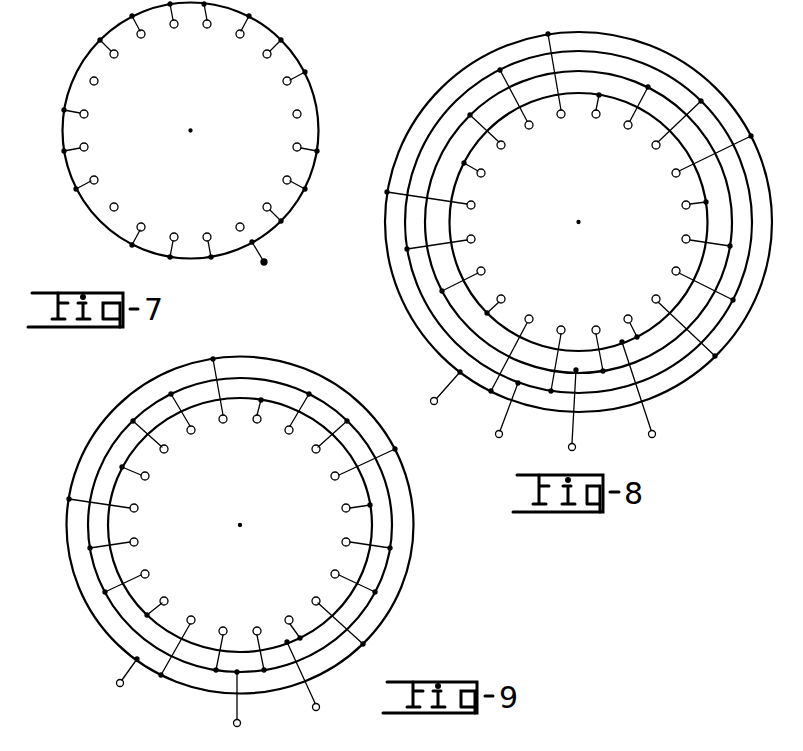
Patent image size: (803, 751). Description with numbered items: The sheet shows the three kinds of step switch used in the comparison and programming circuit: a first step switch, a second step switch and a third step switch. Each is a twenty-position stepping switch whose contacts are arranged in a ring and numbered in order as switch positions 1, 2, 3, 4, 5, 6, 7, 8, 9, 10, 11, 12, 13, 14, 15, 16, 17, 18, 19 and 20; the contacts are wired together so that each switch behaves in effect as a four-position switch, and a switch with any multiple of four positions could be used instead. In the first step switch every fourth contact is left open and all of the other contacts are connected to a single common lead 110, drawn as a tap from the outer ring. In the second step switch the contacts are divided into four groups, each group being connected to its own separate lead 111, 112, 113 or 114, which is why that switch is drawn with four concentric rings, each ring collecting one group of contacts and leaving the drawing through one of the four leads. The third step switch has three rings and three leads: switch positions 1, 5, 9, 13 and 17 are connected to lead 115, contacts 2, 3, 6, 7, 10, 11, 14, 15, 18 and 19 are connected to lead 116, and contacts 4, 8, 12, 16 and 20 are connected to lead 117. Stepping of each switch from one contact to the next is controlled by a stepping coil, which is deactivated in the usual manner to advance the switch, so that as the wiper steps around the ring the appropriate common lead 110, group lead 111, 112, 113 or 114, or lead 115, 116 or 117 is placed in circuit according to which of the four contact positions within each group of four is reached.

In FIG. 7, the switch position 1 is at (207, 23).
In FIG. 8, the switch position 1 is at (596, 114).
In FIG. 9, the switch position 1 is at (258, 419).
In FIG. 7, the switch contact 2 is at (241, 34).
In FIG. 8, the switch contact 2 is at (635, 114).
In FIG. 9, the switch contact 2 is at (295, 420).
In FIG. 7, the switch contact 3 is at (269, 54).
In FIG. 8, the switch contact 3 is at (673, 130).
In FIG. 9, the switch contact 3 is at (326, 442).
In FIG. 7, the switch contact 4 is at (289, 82).
In FIG. 8, the switch contact 4 is at (707, 160).
In FIG. 9, the switch contact 4 is at (359, 468).
In FIG. 7, the switch position 5 is at (291, 116).
In FIG. 8, the switch position 5 is at (689, 207).
In FIG. 9, the switch position 5 is at (351, 510).
In FIG. 7, the switch contact 6 is at (300, 146).
In FIG. 8, the switch contact 6 is at (701, 240).
In FIG. 9, the switch contact 6 is at (361, 542).
In FIG. 7, the switch contact 7 is at (289, 179).
In FIG. 8, the switch contact 7 is at (698, 281).
In FIG. 9, the switch contact 7 is at (349, 578).
In FIG. 7, the switch contact 8 is at (269, 207).
In FIG. 8, the switch contact 8 is at (680, 321).
In FIG. 9, the switch contact 8 is at (334, 616).
In FIG. 7, the switch position 9 is at (237, 220).
In FIG. 8, the switch position 9 is at (629, 320).
In FIG. 9, the switch position 9 is at (291, 621).
In FIG. 7, the switch contact 10 is at (205, 238).
In FIG. 8, the switch contact 10 is at (595, 342).
In FIG. 9, the switch contact 10 is at (257, 642).
In FIG. 7, the switch contact 11 is at (175, 238).
In FIG. 8, the switch contact 11 is at (560, 352).
In FIG. 9, the switch contact 11 is at (223, 642).
In FIG. 7, the switch contact 12 is at (142, 228).
In FIG. 8, the switch contact 12 is at (515, 347).
In FIG. 9, the switch contact 12 is at (182, 640).
In FIG. 7, the switch position 13 is at (120, 201).
In FIG. 8, the switch position 13 is at (501, 299).
In FIG. 9, the switch position 13 is at (163, 601).
In FIG. 7, the switch contact 14 is at (94, 179).
In FIG. 8, the switch contact 14 is at (470, 276).
In FIG. 9, the switch contact 14 is at (133, 578).
In FIG. 7, the switch contact 15 is at (83, 146).
In FIG. 8, the switch contact 15 is at (448, 241).
In FIG. 9, the switch contact 15 is at (121, 542).
In FIG. 7, the switch contact 16 is at (83, 115).
In FIG. 8, the switch contact 16 is at (438, 202).
In FIG. 9, the switch contact 16 is at (111, 507).
In FIG. 7, the switch position 17 is at (102, 86).
In FIG. 8, the switch position 17 is at (481, 173).
In FIG. 9, the switch position 17 is at (142, 477).
In FIG. 7, the switch contact 18 is at (114, 54).
In FIG. 8, the switch contact 18 is at (493, 137).
In FIG. 9, the switch contact 18 is at (156, 442).
In FIG. 7, the switch contact 19 is at (142, 34).
In FIG. 8, the switch contact 19 is at (520, 106).
In FIG. 9, the switch contact 19 is at (187, 420).
In FIG. 7, the switch contact 20 is at (175, 23).
In FIG. 8, the switch contact 20 is at (558, 83).
In FIG. 9, the switch contact 20 is at (221, 398).
In FIG. 7, the common lead 110 is at (259, 252).
In FIG. 8, the lead 111 is at (447, 385).
In FIG. 8, the lead 112 is at (504, 421).
In FIG. 8, the lead 113 is at (574, 430).
In FIG. 8, the lead 114 is at (648, 418).
In FIG. 9, the lead 115 is at (313, 695).
In FIG. 9, the lead 116 is at (238, 705).
In FIG. 9, the lead 117 is at (128, 676).